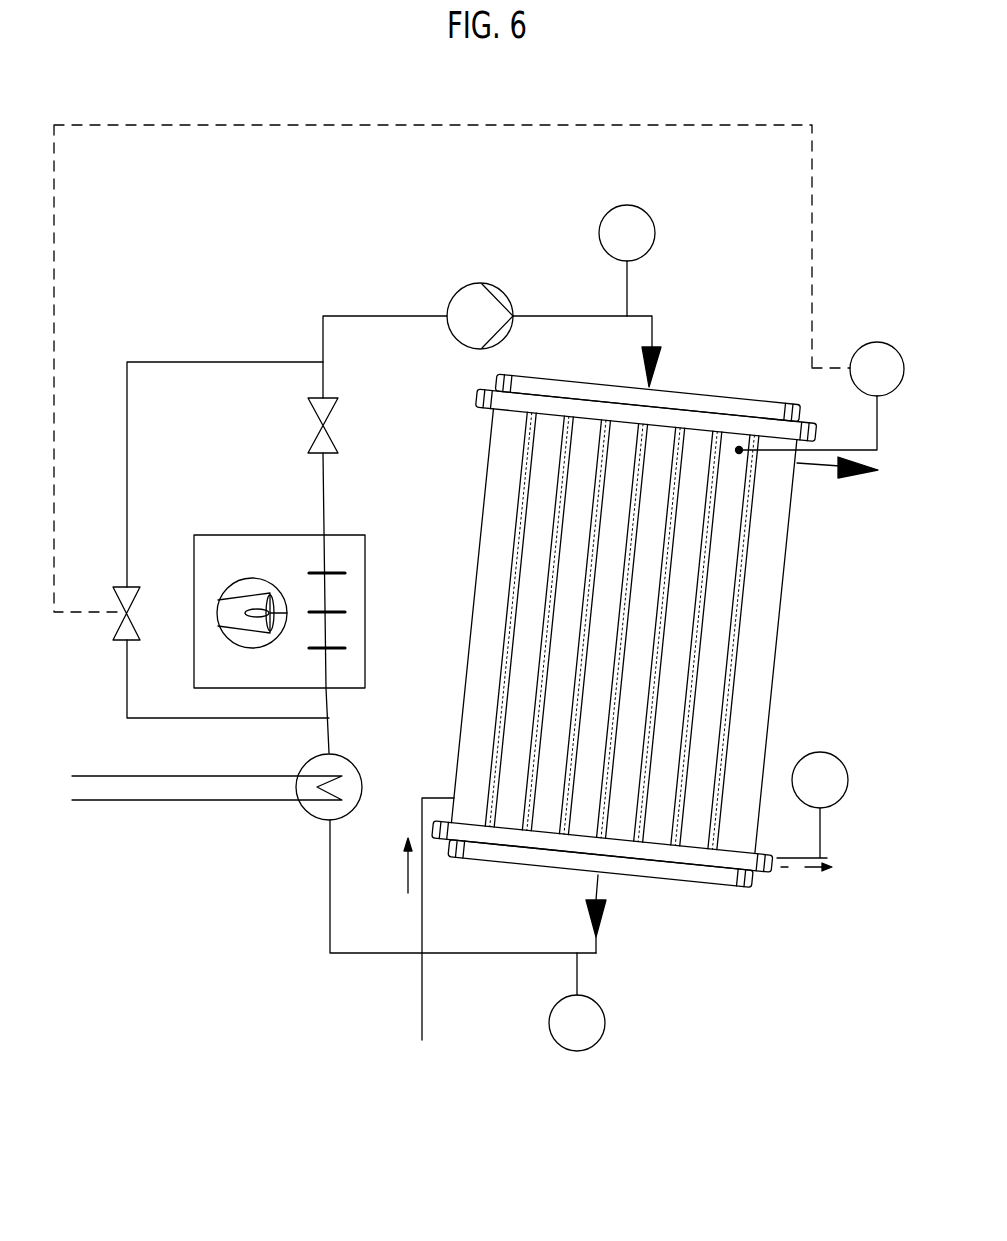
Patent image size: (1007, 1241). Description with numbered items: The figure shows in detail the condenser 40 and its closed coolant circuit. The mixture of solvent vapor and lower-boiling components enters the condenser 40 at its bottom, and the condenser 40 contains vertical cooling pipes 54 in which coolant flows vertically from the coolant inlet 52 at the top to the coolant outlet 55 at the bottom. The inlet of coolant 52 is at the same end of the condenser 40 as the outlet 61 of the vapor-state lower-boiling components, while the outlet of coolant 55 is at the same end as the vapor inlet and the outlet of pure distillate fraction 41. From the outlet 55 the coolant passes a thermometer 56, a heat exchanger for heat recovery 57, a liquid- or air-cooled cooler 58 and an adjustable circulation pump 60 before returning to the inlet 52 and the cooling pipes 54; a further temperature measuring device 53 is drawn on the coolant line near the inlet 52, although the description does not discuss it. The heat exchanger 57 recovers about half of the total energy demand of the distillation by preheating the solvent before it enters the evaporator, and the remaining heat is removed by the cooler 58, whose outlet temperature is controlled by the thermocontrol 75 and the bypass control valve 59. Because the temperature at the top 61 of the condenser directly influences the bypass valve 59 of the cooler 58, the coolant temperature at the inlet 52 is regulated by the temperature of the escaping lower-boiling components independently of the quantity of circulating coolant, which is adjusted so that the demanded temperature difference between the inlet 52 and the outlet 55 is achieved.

The condenser 40 is at (775, 650).
The outlet of pure distillate fraction 41 is at (793, 860).
The inlet of coolant 52 is at (657, 322).
The inlet temperature sensor 53 is at (652, 218).
The cooling pipes 54 is at (750, 552).
The outlet of coolant 55 is at (602, 885).
The thermometer 56 is at (605, 1005).
The heat exchanger for heat recovery 57 is at (355, 768).
The cooler 58 is at (262, 545).
The bypass control valve 59 is at (117, 643).
The adjustable circulation pump 60 is at (450, 303).
The outlet of the vapor state lower-boiling components 61 is at (817, 470).
The thermocontrol 75 is at (875, 342).